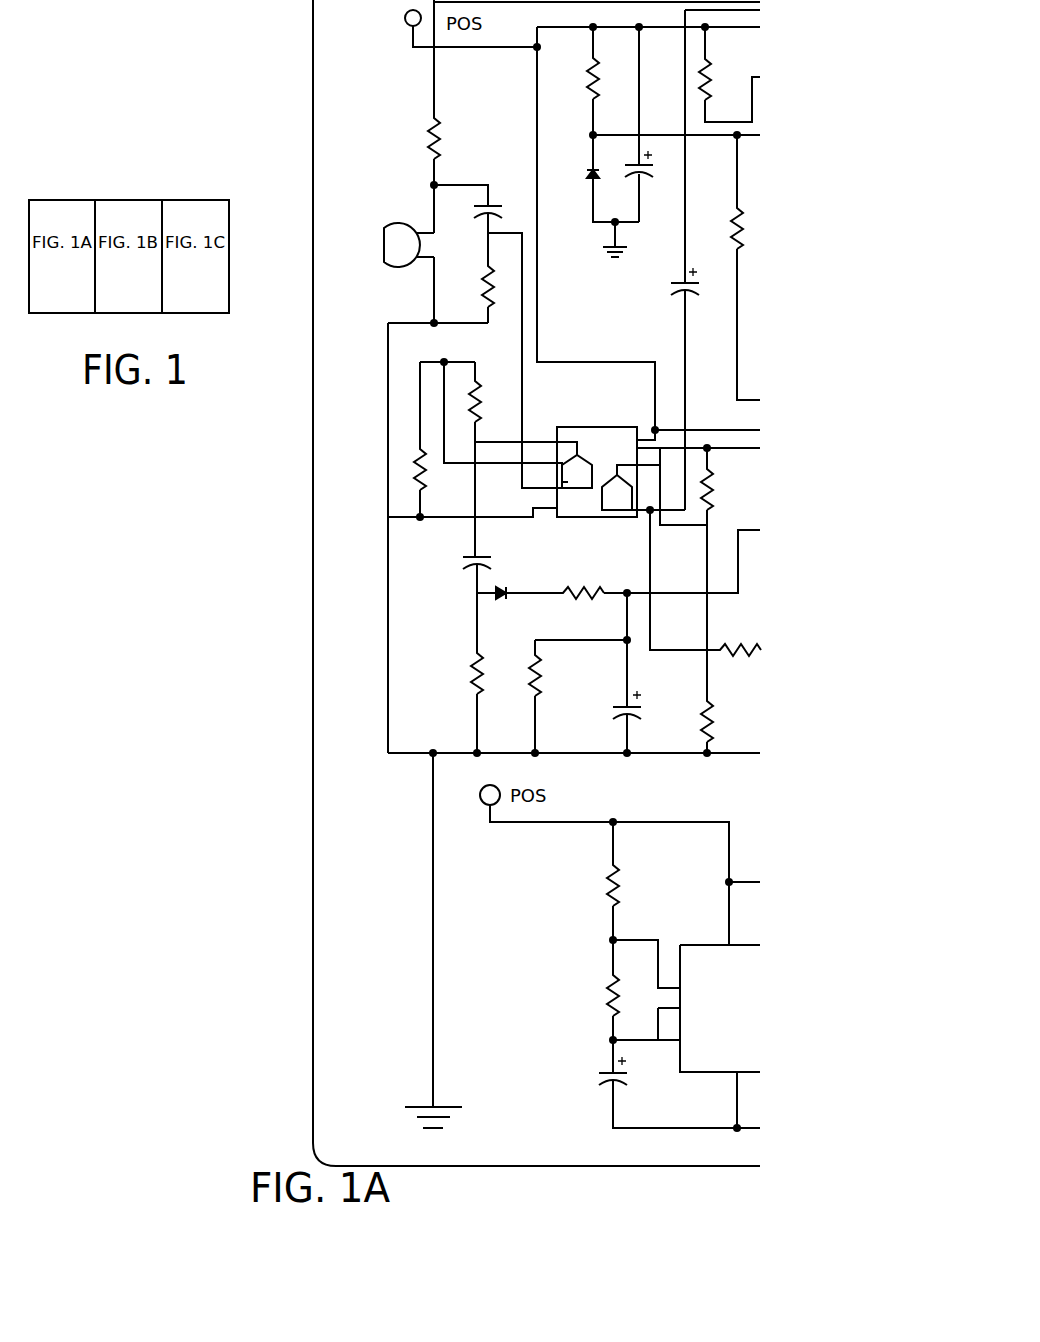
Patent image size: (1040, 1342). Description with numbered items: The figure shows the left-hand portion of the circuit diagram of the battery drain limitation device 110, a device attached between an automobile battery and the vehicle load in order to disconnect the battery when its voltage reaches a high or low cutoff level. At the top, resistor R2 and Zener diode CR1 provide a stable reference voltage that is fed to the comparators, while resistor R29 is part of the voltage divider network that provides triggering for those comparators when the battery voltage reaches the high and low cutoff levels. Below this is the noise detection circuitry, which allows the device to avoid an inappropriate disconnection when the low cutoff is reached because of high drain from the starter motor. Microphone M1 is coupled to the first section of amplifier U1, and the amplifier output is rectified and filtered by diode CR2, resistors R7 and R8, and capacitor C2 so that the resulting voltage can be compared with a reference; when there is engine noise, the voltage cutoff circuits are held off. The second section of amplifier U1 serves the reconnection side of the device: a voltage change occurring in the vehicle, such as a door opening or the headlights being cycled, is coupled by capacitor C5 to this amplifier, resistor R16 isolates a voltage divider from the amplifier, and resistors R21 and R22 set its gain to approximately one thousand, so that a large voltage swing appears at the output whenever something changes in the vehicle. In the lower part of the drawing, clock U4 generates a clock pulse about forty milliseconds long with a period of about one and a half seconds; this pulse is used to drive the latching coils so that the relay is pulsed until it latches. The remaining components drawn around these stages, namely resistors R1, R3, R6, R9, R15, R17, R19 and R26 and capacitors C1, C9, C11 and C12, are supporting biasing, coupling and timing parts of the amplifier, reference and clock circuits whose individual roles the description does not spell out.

The battery drain limitation device 110 is at (313, 90).
The resistor R1 is at (413, 137).
The resistor R2 is at (608, 77).
The resistor R3 is at (726, 227).
The resistor R6 is at (523, 674).
The resistor R7 is at (582, 582).
The resistor R8 is at (488, 400).
The resistor R9 is at (474, 285).
The resistor R15 is at (635, 884).
The resistor R16 is at (739, 639).
The resistor R17 is at (438, 474).
The resistor R19 is at (459, 672).
The resistor R21 is at (726, 488).
The resistor R22 is at (726, 720).
The resistor R26 is at (597, 994).
The resistor R29 is at (723, 76).
The capacitor C1 is at (476, 207).
The capacitor C2 is at (612, 707).
The capacitor C5 is at (694, 297).
The capacitor C9 is at (597, 1071).
The capacitor C11 is at (652, 176).
The capacitor C12 is at (458, 572).
The Zener diode CR1 is at (570, 174).
The diode CR2 is at (504, 609).
The microphone M1 is at (388, 245).
The amplifier U1 is at (598, 462).
The clock U4 is at (715, 1009).